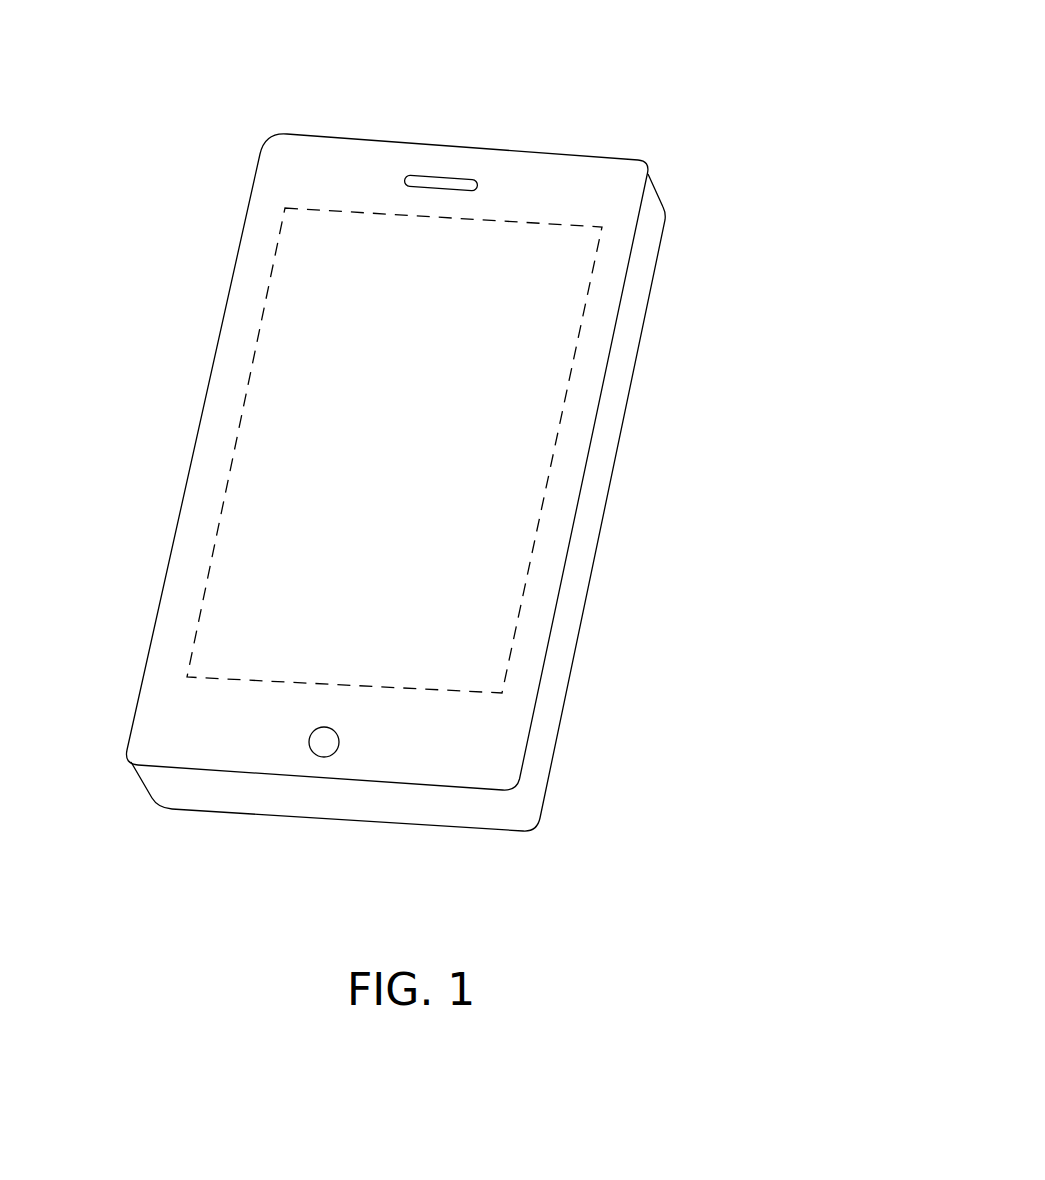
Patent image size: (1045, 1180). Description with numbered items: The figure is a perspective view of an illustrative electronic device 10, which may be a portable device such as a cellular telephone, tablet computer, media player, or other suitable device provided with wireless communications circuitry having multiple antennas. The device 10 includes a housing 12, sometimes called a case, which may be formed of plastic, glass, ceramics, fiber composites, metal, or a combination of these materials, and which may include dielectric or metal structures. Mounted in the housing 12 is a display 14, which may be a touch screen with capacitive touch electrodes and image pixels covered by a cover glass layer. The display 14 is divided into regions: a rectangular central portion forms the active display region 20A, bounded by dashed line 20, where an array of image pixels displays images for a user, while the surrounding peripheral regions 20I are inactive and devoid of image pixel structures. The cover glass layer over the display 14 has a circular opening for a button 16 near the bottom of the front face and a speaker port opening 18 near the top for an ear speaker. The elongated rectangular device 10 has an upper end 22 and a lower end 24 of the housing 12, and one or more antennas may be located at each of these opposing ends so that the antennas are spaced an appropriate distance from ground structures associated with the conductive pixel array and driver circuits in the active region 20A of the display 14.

The electronic device 10 is at (731, 72).
The housing 12 is at (637, 292).
The display 14 is at (538, 443).
The button 16 is at (324, 757).
The speaker port opening 18 is at (433, 178).
The dashed line 20 is at (228, 477).
The active display region 20A is at (240, 563).
The peripheral regions 20I is at (530, 177).
The upper end 22 is at (245, 133).
The lower end 24 is at (128, 687).